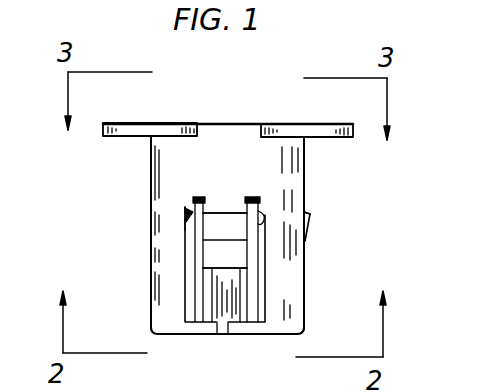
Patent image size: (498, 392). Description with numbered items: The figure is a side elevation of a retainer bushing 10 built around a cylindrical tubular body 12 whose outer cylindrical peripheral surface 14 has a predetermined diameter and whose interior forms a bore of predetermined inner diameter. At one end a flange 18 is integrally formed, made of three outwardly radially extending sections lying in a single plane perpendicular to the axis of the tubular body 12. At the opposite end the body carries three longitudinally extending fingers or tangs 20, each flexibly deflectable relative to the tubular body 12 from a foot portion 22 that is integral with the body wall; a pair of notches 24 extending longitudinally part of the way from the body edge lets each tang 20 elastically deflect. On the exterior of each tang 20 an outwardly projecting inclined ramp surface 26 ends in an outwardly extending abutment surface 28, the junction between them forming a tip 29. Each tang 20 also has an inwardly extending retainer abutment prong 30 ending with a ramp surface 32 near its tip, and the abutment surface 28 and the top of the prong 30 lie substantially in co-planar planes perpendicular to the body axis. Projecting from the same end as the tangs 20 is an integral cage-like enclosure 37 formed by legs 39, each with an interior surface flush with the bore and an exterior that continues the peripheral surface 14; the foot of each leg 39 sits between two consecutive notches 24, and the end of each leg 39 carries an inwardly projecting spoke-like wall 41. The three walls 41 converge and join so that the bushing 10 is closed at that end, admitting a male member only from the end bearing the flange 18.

The retainer bushing 10 is at (137, 155).
The cylindrical tubular body 12 is at (305, 158).
The cylindrical peripheral surface 14 is at (282, 179).
The flange 18 is at (108, 123).
The tang 20 is at (226, 272).
The foot portion 22 is at (213, 232).
The notch 24 is at (253, 197).
The ramp surface 26 is at (187, 246).
The abutment surface 28 is at (306, 214).
The tip 29 is at (308, 215).
The retainer abutment prong 30 is at (224, 202).
The ramp surface 32 is at (185, 208).
The cage-like enclosure 37 is at (283, 336).
The leg 39 is at (164, 306).
The spoke-like wall 41 is at (215, 307).